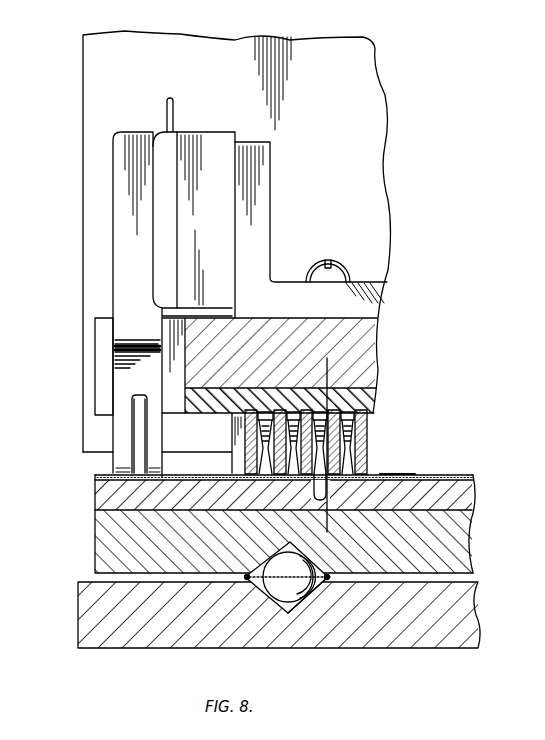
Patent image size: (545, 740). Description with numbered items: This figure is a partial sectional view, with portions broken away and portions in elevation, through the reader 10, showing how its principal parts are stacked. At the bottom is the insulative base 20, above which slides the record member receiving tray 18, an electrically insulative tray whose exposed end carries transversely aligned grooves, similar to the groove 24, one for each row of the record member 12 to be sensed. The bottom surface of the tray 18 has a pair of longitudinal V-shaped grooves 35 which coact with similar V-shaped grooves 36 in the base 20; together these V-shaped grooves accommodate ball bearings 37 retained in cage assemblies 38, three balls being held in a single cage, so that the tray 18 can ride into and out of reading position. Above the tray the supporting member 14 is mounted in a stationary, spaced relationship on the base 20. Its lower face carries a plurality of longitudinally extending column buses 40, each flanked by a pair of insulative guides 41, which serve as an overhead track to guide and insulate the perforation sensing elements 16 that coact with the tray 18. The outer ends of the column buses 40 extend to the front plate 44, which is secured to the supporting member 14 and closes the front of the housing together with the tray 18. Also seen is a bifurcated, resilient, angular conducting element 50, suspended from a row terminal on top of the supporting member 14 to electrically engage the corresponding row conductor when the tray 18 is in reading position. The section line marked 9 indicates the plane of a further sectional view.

The section line 9- 9 is at (327, 358).
The reader 10 is at (203, 473).
The record member 12 is at (375, 480).
The supporting member 14 is at (363, 328).
The perforation sensing elements 16 is at (353, 441).
The record member receiving tray 18 is at (108, 537).
The base 20 is at (87, 600).
The groove 24 is at (310, 488).
The V-shaped grooves 35 is at (288, 553).
The V-shaped grooves 36 is at (305, 601).
The ball bearings 37 is at (267, 556).
The cage assemblies 38 is at (247, 575).
The column buses 40 is at (324, 417).
The insulative guides 41 is at (250, 453).
The front plate 44 is at (97, 152).
The conducting element 50 is at (115, 362).